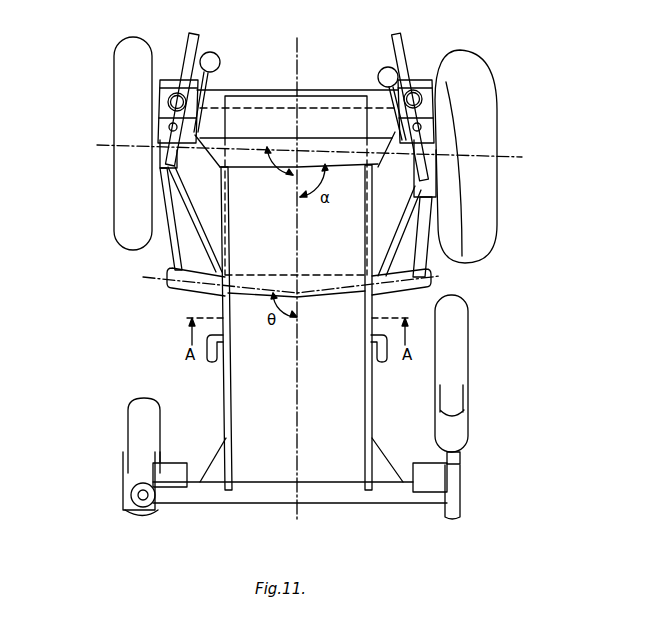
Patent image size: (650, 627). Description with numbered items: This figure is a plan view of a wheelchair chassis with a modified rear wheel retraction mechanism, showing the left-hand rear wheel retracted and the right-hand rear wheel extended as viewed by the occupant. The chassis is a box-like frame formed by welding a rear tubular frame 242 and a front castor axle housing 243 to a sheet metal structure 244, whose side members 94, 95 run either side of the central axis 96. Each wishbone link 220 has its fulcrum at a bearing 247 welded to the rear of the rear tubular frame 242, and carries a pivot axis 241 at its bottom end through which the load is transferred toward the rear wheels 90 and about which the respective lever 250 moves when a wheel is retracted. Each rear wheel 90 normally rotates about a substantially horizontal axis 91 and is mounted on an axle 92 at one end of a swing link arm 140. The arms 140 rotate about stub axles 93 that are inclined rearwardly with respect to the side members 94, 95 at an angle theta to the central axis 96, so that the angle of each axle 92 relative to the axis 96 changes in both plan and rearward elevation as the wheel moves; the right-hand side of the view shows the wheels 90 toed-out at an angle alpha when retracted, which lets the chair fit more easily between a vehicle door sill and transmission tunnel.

The bearing 247 is at (160, 82).
The wishbone link 220 is at (158, 100).
The pivot axis 241 is at (165, 120).
The axle 92 is at (170, 130).
The horizontal axis 91 is at (105, 147).
The rear wheel 90 is at (128, 205).
The swing link arm 140 is at (177, 243).
The stub axle 93 is at (170, 282).
The lever 250 is at (383, 70).
The rear tubular frame 242 is at (273, 100).
The sheet metal structure 244 is at (275, 256).
The side member 94 is at (230, 408).
The side member 95 is at (368, 372).
The central axis 96 is at (300, 432).
The front castor axle housing 243 is at (276, 495).